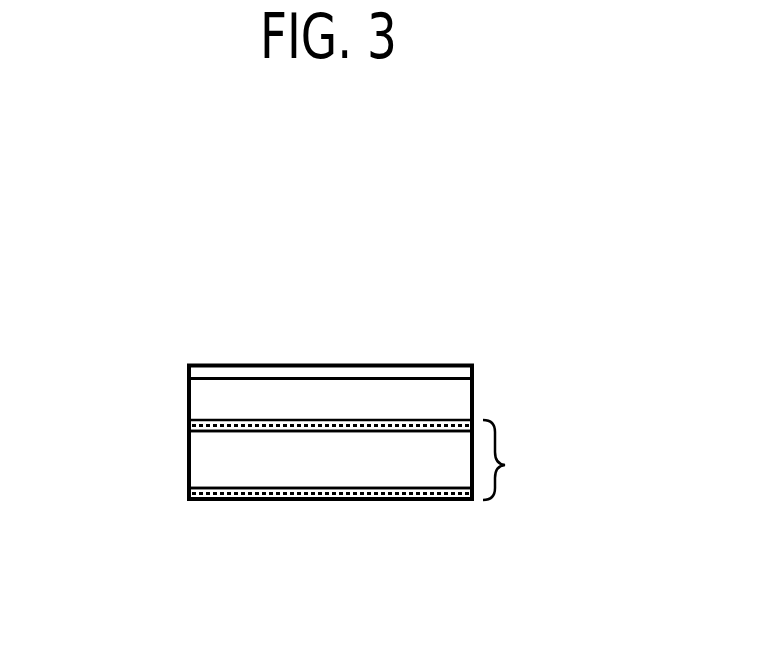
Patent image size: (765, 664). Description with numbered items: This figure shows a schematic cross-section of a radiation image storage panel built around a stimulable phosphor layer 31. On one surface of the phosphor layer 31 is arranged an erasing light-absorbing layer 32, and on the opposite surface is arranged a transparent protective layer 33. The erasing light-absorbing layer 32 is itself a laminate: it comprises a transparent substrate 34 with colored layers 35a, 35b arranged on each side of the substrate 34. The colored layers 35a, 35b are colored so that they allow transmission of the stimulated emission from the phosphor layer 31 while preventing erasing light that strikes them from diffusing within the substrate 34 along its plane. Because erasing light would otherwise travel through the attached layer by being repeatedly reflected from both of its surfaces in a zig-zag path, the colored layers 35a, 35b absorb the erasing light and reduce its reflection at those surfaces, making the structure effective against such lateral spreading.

The stimulable phosphor layer 31 is at (474, 405).
The erasing light-absorbing layer 32 is at (522, 460).
The transparent protective layer 33 is at (438, 365).
The transparent substrate 34 is at (188, 452).
The colored layer 35a is at (188, 423).
The colored layer 35b is at (188, 498).